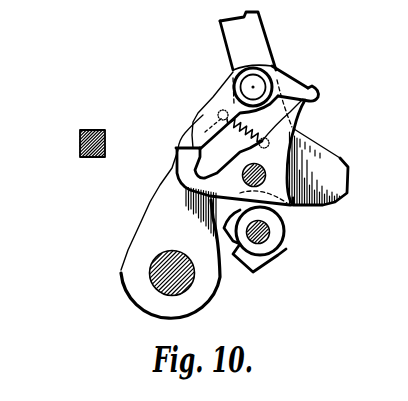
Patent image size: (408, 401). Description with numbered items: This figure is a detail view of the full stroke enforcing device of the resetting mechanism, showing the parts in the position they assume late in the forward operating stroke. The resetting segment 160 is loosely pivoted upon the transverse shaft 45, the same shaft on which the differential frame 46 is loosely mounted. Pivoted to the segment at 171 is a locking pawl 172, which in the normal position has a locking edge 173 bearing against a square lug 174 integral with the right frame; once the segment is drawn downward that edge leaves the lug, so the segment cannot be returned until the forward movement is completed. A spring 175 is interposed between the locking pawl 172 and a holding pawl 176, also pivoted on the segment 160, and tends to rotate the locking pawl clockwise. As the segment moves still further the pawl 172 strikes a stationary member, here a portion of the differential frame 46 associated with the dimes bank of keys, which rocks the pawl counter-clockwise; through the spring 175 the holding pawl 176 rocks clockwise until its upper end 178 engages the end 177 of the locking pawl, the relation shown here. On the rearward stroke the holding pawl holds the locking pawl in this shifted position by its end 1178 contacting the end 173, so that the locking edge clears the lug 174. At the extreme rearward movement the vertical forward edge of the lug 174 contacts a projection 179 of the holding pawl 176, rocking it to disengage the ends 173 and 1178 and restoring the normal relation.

The resetting segment 160 is at (340, 184).
The pivot 171 is at (245, 178).
The locking pawl 172 is at (292, 206).
The locking edge 173 is at (176, 151).
The square lug 174 is at (80, 143).
The spring 175 is at (202, 151).
The holding pawl 176 is at (243, 77).
The end of locking pawl 177 is at (314, 112).
The upper end of holding pawl 178 is at (312, 86).
The projection 179 is at (196, 116).
The end of holding pawl 1178 is at (194, 148).
The transverse shaft 45 is at (151, 280).
The frame 46 is at (278, 248).